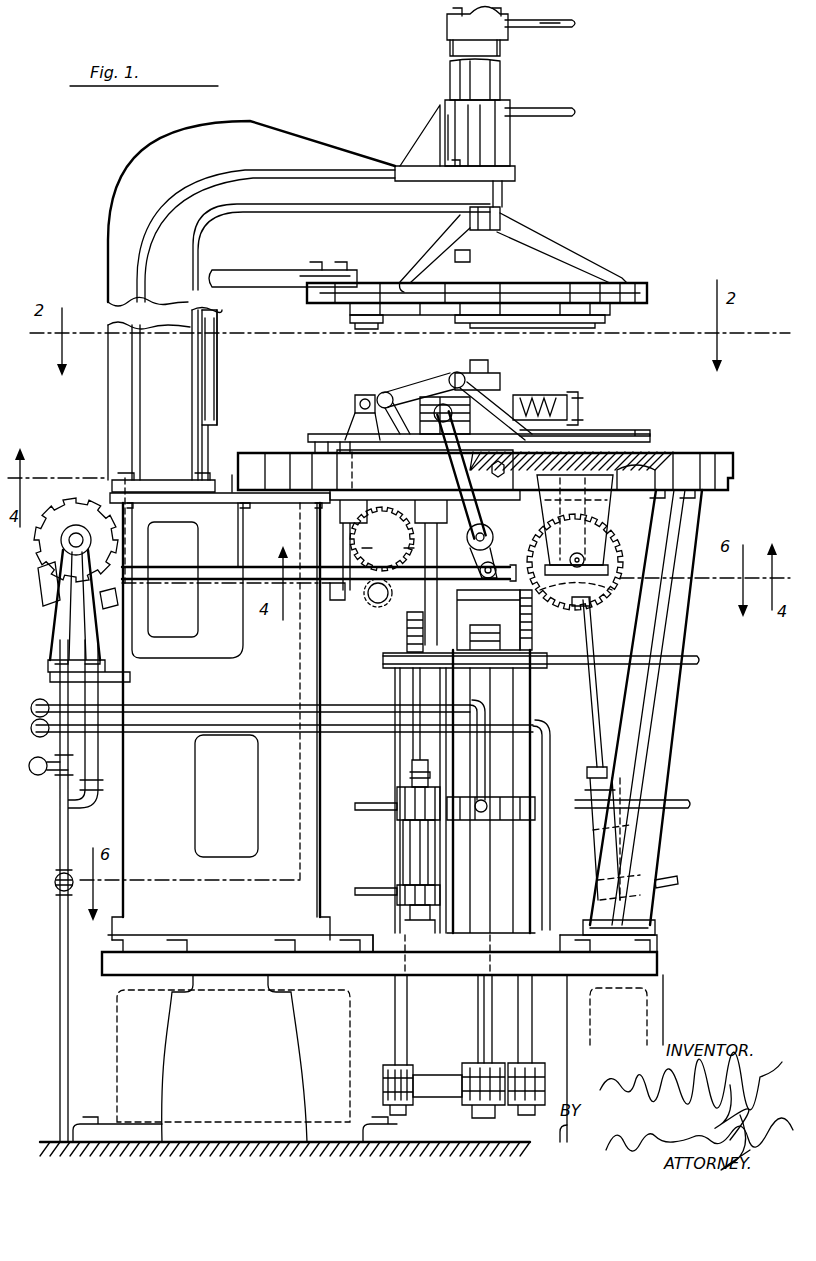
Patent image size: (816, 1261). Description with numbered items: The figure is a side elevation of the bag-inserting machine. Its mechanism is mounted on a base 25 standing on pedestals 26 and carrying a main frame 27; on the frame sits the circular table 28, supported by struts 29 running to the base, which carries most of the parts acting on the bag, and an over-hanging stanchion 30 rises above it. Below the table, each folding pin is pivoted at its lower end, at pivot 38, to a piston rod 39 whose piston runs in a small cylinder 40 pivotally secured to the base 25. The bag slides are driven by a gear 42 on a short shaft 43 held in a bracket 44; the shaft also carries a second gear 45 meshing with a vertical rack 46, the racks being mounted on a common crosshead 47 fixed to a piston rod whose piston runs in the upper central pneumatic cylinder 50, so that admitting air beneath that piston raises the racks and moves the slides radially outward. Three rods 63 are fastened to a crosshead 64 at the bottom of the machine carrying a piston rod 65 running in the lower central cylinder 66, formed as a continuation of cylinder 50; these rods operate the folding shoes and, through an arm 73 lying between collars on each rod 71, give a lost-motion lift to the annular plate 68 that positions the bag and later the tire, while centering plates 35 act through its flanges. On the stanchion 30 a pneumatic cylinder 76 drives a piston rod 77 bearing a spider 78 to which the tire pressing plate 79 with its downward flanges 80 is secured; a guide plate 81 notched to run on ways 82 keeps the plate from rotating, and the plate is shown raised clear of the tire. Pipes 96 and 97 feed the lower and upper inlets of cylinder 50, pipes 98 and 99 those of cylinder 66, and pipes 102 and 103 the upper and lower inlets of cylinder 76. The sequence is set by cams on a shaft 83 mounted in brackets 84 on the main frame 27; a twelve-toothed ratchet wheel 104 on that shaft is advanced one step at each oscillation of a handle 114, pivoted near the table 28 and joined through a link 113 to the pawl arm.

The base 25 is at (437, 963).
The pedestals 26 is at (155, 1044).
The main frame 27 is at (172, 808).
The circular table 28 is at (718, 463).
The struts 29 is at (645, 851).
The over-hanging stanchion 30 is at (142, 202).
The centering plates 35 is at (418, 392).
The pivot 38 is at (583, 641).
The piston rod 39 is at (475, 780).
The cylinder 40 is at (410, 872).
The gear 42 is at (625, 566).
The short shaft 43 is at (583, 570).
The bracket 44 is at (610, 498).
The second gear 45 is at (630, 548).
The vertical rack 46 is at (522, 622).
The crosshead 47 is at (453, 622).
The pneumatic cylinder 50 is at (495, 758).
The rods 63 is at (400, 1054).
The crosshead 64 is at (447, 1090).
The piston rod 65 is at (484, 1005).
The pneumatic cylinder 66 is at (490, 886).
The annular plate 68 is at (625, 434).
The rods 71 is at (340, 613).
The arm 73 is at (333, 592).
The pneumatic cylinder 76 is at (505, 68).
The piston rod 77 is at (490, 145).
The spider 78 is at (586, 262).
The tire pressing plate 79 is at (645, 288).
The flanges 80 is at (365, 325).
The guide plate 81 is at (285, 272).
The ways 82 is at (208, 352).
The shaft 83 is at (76, 525).
The brackets 84 is at (66, 647).
The pipe 96 is at (660, 801).
The pipe 97 is at (697, 668).
The pipe 98 is at (548, 856).
The pipe 99 is at (427, 769).
The pipe 102 is at (528, 25).
The pipe 103 is at (562, 117).
The ratchet wheel 104 is at (47, 544).
The link 113 is at (217, 577).
The handle 114 is at (460, 476).